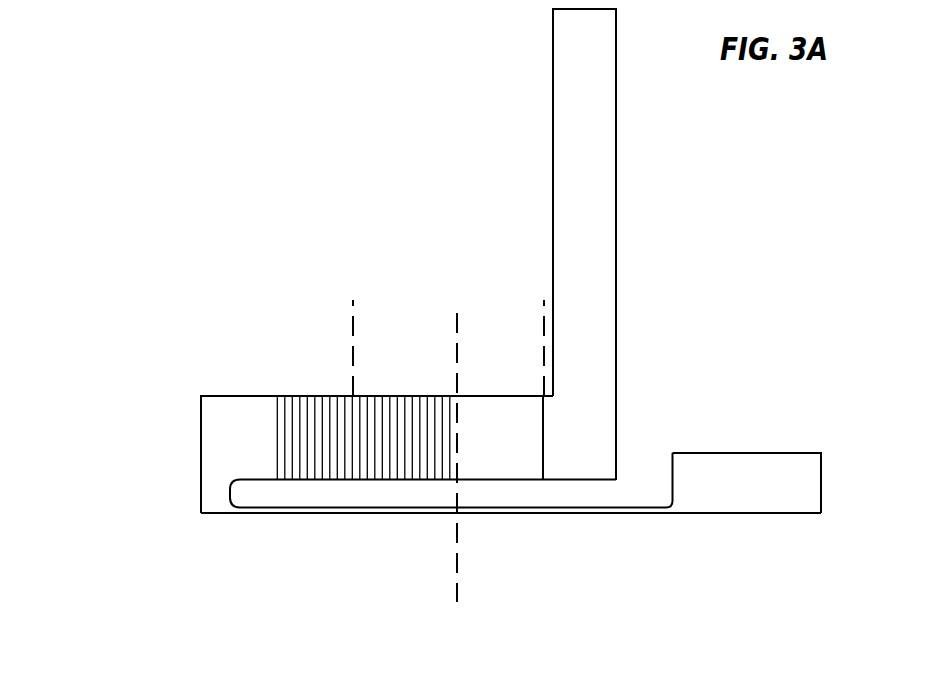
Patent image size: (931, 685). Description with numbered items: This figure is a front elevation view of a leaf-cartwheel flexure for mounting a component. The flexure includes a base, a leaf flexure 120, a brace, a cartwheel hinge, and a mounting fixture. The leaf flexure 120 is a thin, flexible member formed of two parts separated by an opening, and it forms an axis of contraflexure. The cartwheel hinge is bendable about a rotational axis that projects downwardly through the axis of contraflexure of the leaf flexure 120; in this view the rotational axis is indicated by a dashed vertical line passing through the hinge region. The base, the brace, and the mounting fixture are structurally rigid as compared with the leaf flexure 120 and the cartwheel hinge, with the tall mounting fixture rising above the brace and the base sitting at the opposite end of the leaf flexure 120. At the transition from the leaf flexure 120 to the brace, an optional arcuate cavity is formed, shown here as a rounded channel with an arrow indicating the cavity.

The leaf flexure 120 is at (540, 512).